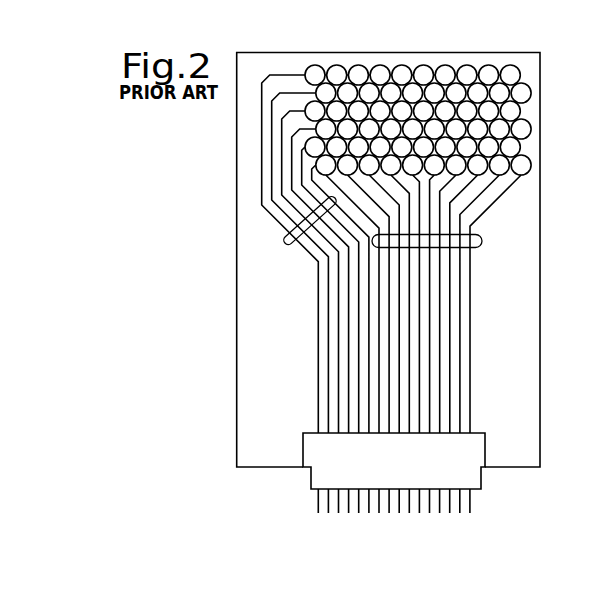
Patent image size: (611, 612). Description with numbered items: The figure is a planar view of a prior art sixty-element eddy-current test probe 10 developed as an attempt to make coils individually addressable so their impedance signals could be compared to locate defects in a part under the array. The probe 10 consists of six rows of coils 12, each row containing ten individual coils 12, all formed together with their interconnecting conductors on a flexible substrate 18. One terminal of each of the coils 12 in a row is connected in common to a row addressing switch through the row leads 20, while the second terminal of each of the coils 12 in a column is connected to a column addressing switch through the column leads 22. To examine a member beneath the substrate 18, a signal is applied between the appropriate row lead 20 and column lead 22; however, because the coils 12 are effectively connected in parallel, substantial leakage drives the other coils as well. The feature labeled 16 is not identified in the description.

The test probe 10 is at (540, 78).
The coils 12 is at (373, 69).
The diagonal column interconnection 16 is at (524, 140).
The substrate 18 is at (468, 63).
The row leads 20 is at (285, 244).
The column leads 22 is at (482, 240).